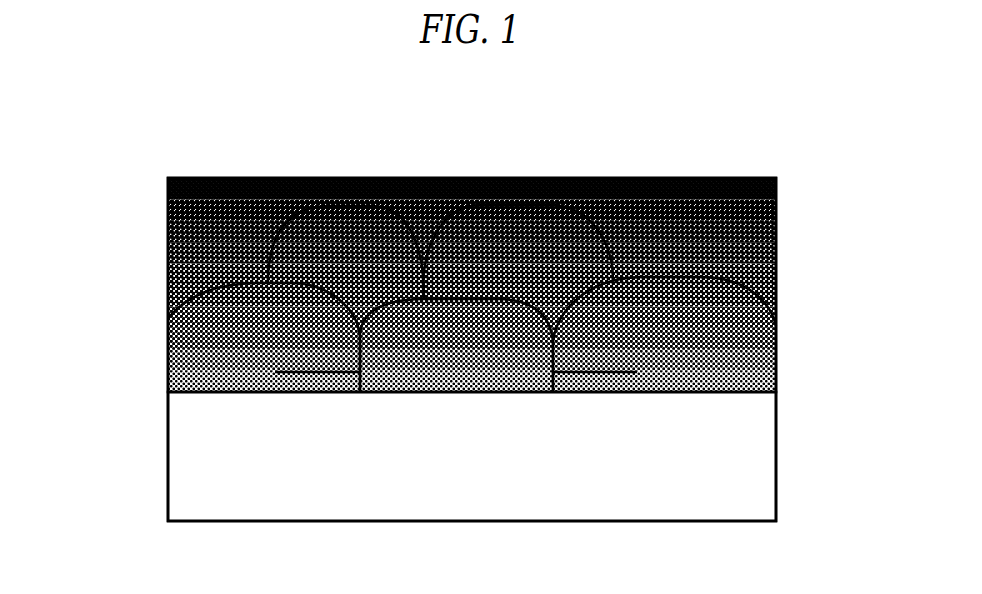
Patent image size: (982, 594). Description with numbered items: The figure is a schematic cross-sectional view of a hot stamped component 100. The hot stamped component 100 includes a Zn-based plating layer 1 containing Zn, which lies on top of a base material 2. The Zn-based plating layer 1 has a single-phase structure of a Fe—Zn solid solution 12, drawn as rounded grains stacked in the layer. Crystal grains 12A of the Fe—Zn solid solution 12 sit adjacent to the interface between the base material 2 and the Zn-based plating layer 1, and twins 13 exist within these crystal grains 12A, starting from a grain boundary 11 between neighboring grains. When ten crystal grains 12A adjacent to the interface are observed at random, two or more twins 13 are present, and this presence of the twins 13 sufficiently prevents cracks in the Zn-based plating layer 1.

The hot stamped component 100 is at (732, 164).
The Zn-based plating layer 1 is at (154, 383).
The base material 2 is at (763, 458).
The grain boundary 11 is at (475, 290).
The Fe—Zn solid solution 12 is at (716, 302).
The crystal grains 12A is at (215, 353).
The twins 13 is at (318, 374).